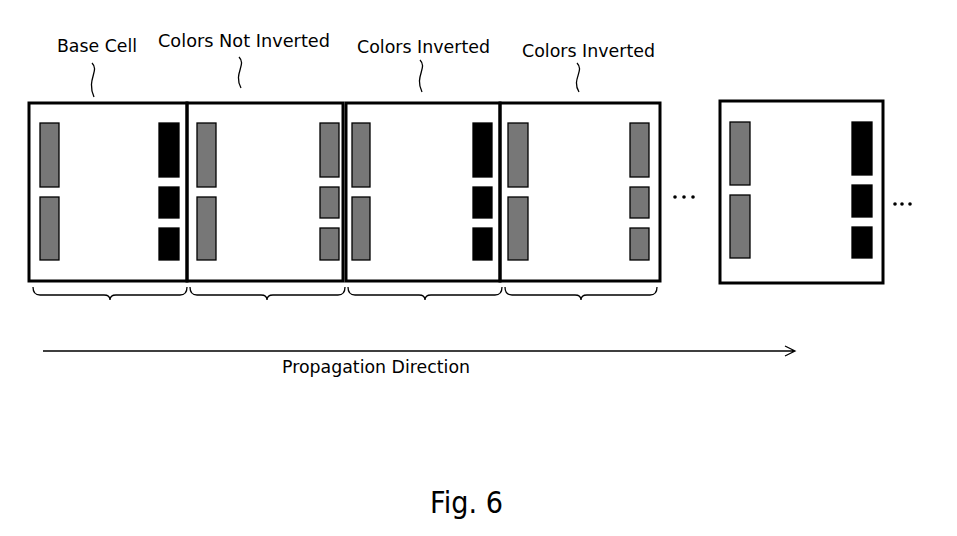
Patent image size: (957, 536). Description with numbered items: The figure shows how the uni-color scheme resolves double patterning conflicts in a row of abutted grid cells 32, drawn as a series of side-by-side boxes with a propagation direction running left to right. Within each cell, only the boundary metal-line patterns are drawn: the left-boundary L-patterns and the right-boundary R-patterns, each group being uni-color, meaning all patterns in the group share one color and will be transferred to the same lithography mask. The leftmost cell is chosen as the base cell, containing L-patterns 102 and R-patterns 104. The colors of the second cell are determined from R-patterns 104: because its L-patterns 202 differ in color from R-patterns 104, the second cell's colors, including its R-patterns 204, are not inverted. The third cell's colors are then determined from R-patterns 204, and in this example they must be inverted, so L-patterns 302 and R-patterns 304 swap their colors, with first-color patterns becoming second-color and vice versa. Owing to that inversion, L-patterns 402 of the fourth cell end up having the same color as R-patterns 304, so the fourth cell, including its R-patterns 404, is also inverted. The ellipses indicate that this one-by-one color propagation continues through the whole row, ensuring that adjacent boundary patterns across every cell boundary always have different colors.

The grid cell 32 is at (456, 218).
The patterns 102 is at (55, 222).
The R-patterns 104 is at (162, 237).
The L-patterns 202 is at (213, 220).
The R-patterns 204 is at (323, 238).
The L-patterns 302 is at (367, 220).
The R-patterns 304 is at (474, 236).
The L-patterns 402 is at (529, 228).
The R-patterns 404 is at (631, 158).